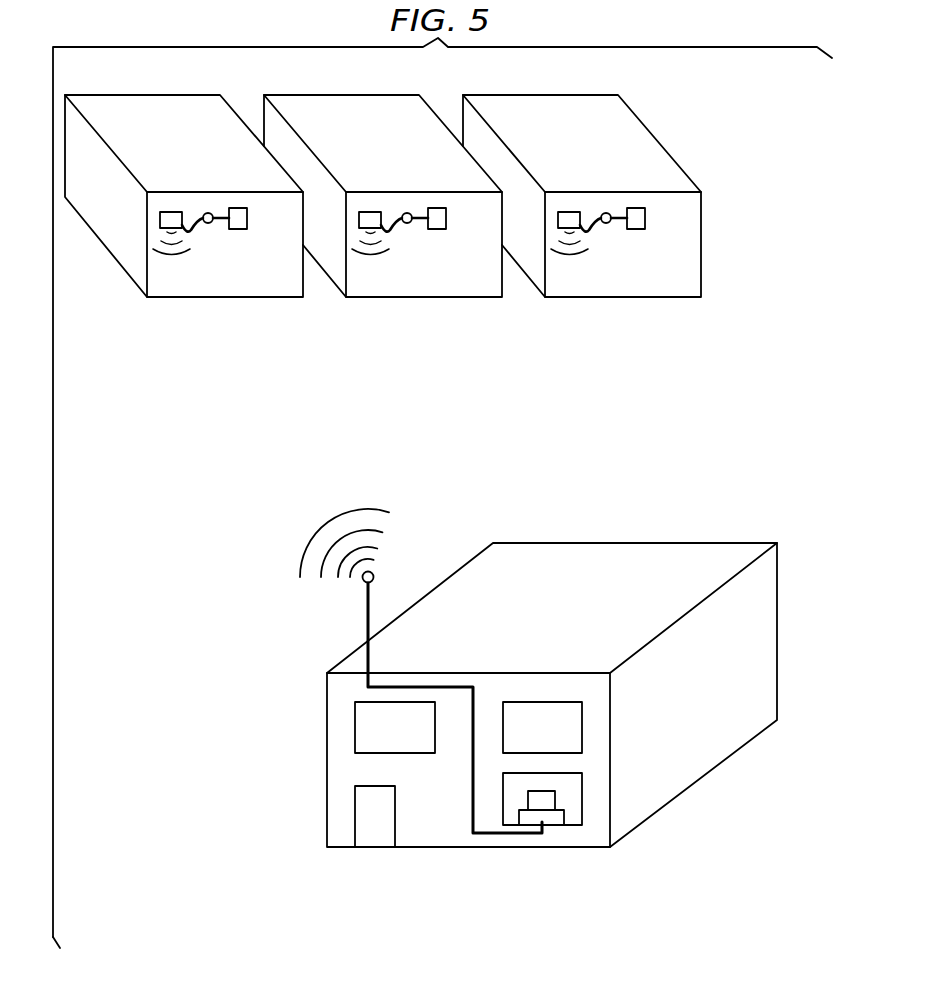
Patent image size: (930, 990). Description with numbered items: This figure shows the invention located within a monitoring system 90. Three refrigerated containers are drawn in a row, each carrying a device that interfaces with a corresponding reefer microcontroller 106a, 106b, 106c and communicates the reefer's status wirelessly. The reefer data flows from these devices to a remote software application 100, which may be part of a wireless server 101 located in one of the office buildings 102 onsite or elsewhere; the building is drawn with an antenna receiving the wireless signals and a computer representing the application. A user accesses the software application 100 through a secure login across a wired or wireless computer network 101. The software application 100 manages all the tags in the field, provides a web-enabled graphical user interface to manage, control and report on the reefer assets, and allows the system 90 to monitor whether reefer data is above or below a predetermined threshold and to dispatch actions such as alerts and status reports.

The system 90 is at (234, 452).
The reefer microcontroller 106a is at (233, 229).
The reefer microcontroller 106b is at (432, 229).
The reefer microcontroller 106c is at (631, 229).
The software application 100 is at (545, 802).
The wireless server 101 is at (368, 623).
The office building 102 is at (566, 696).